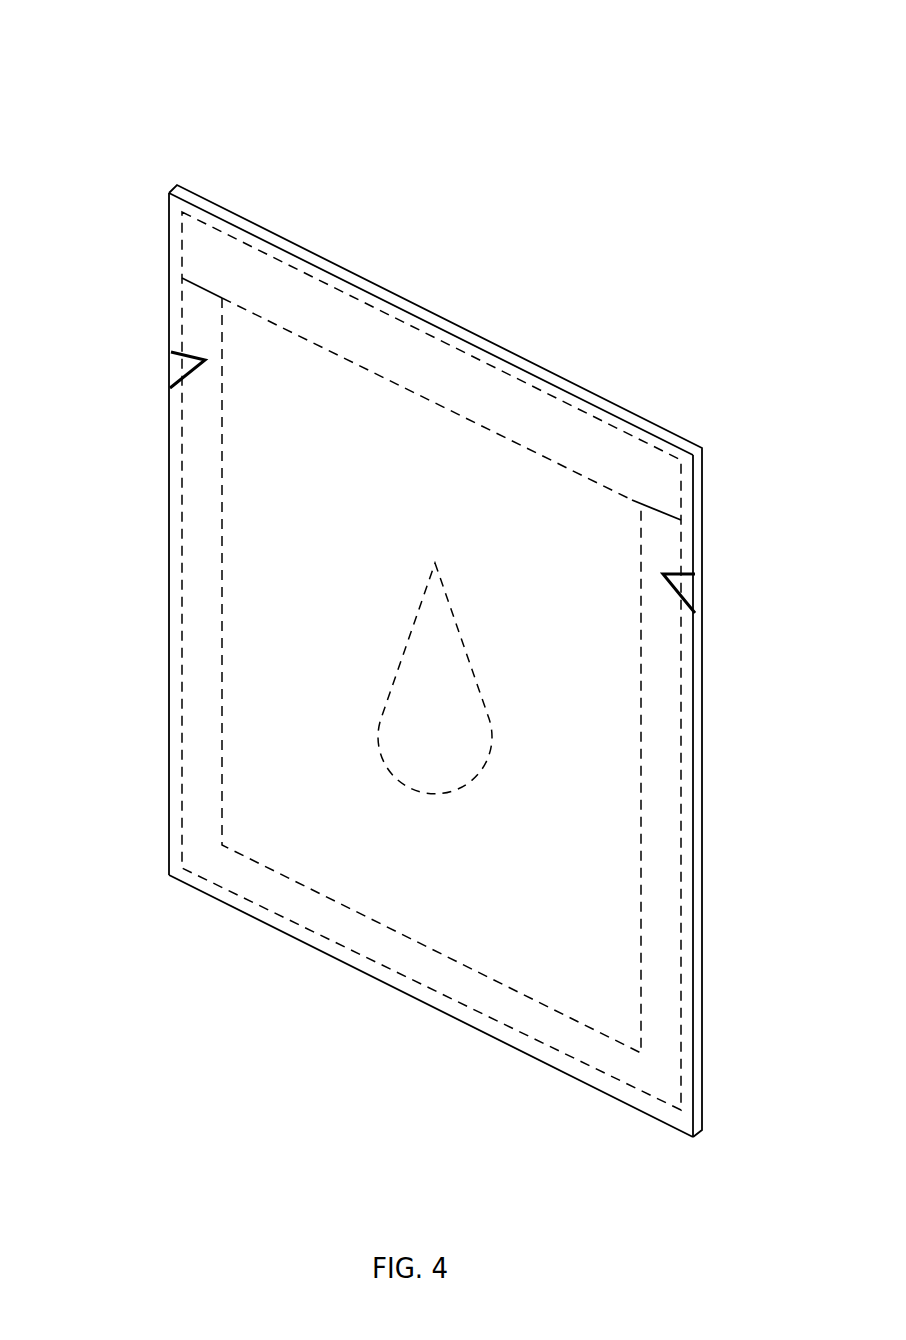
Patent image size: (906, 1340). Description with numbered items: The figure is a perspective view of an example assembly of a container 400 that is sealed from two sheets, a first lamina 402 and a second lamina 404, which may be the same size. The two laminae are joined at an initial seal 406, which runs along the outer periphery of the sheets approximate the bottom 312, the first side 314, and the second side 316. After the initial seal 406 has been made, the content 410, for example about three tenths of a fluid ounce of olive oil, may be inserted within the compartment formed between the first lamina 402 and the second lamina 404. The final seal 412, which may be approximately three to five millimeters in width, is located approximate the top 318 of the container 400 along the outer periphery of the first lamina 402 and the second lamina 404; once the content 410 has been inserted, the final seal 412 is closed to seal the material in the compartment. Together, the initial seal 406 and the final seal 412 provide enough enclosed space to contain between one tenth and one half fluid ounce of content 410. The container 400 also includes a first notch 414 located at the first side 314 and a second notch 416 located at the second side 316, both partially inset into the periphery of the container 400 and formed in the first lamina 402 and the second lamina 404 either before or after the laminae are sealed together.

The container 400 is at (87, 44).
The first lamina 402 is at (170, 200).
The second lamina 404 is at (697, 447).
The initial seal 406 is at (223, 505).
The content 410 is at (450, 610).
The final seal 412 is at (512, 437).
The first notch 414 is at (177, 363).
The second notch 416 is at (697, 590).
The bottom 312 is at (431, 1006).
The first side 314 is at (135, 534).
The second side 316 is at (739, 796).
The top 318 is at (431, 324).